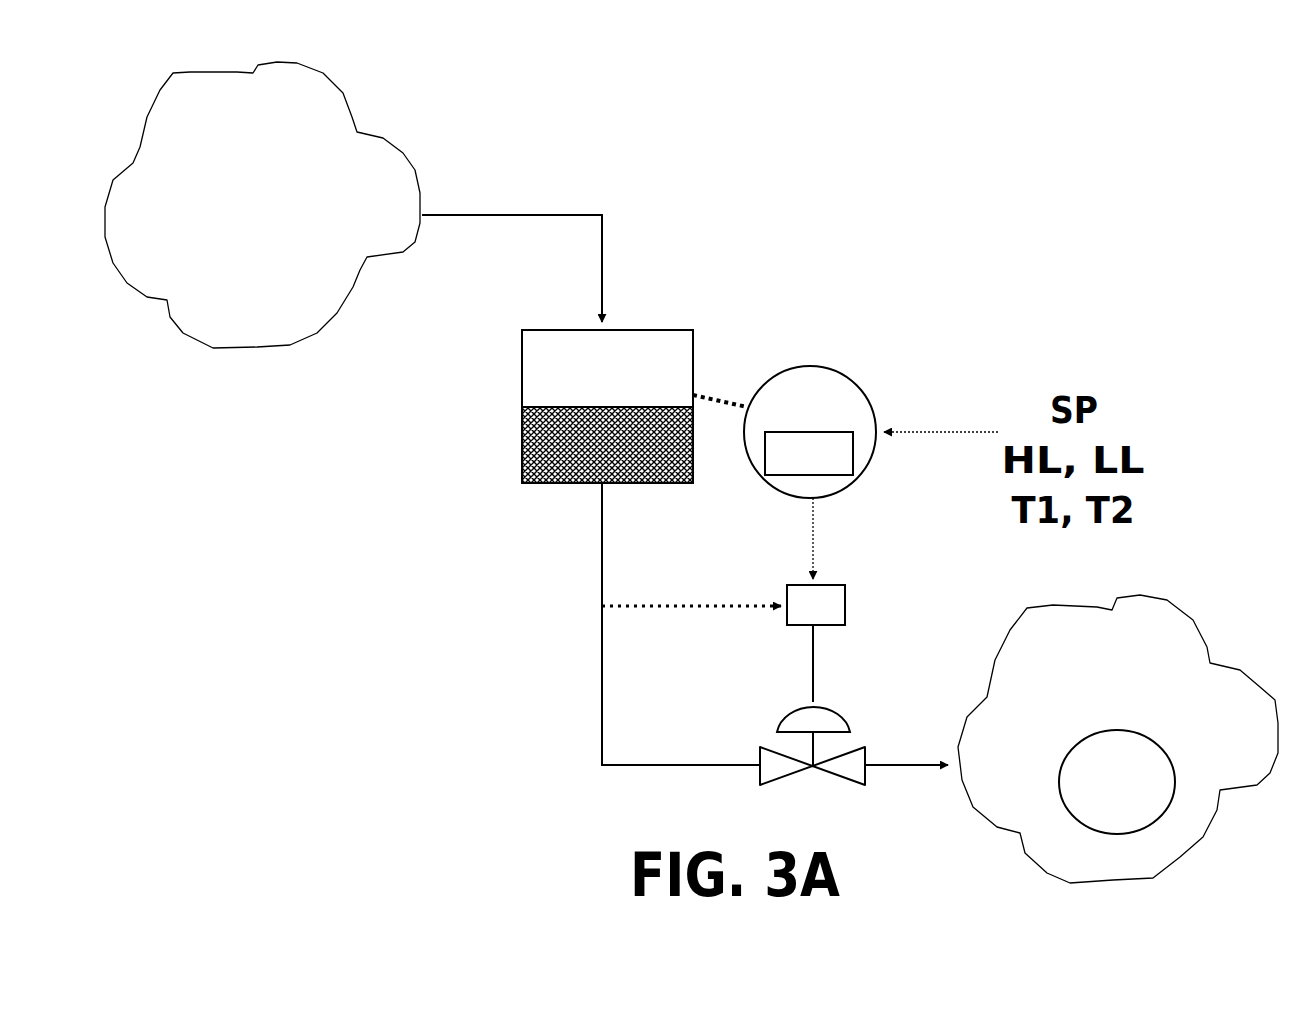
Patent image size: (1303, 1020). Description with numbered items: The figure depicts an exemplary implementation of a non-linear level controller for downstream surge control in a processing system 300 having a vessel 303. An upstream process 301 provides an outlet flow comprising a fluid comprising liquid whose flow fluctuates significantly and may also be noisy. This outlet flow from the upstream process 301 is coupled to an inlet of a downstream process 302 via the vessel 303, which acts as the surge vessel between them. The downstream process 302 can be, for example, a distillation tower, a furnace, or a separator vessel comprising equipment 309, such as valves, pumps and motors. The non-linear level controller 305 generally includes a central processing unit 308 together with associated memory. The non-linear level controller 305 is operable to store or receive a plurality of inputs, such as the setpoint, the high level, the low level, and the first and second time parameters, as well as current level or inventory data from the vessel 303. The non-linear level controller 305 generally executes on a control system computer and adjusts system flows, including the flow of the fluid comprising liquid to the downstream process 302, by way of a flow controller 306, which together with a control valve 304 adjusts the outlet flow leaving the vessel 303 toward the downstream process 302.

The processing system 300 is at (413, 702).
The upstream process 301 is at (262, 205).
The downstream process 302 is at (1118, 739).
The vessel 303 is at (657, 392).
The control valve 304 is at (812, 734).
The non-linear level controller (NLLC) 305 is at (842, 378).
The flow controller (FC) 306 is at (787, 613).
The central processing unit (CPU) 308 is at (835, 472).
The equipment 309 is at (1117, 782).